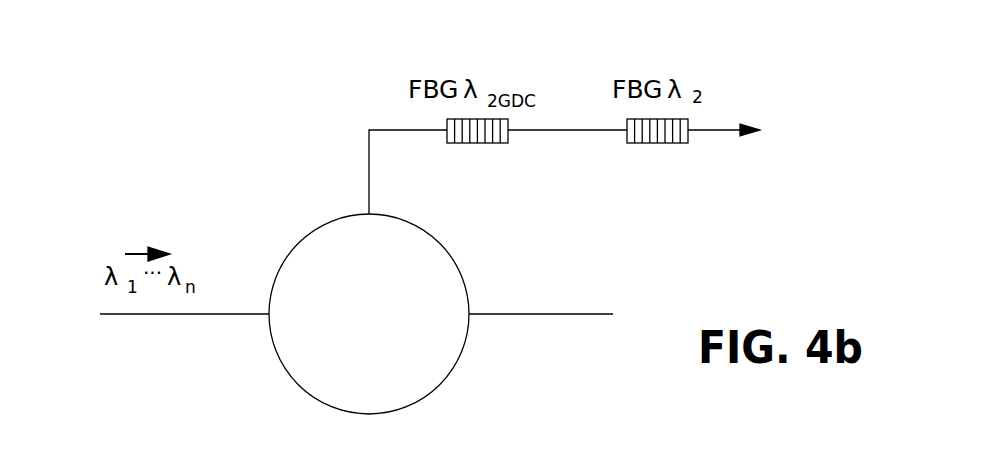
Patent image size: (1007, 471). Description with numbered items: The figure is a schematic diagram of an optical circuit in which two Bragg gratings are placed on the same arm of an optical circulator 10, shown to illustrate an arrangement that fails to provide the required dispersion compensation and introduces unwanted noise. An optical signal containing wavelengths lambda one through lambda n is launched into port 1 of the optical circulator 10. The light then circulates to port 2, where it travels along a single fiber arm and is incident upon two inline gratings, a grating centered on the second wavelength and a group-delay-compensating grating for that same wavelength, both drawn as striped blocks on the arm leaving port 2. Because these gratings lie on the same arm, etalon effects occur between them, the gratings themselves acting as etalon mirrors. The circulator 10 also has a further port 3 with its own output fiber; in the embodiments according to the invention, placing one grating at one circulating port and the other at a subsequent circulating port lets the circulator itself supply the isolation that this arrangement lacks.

The optical circulator 10 is at (322, 350).
The port 1 is at (281, 314).
The port 2 is at (369, 229).
The port 3 is at (460, 314).